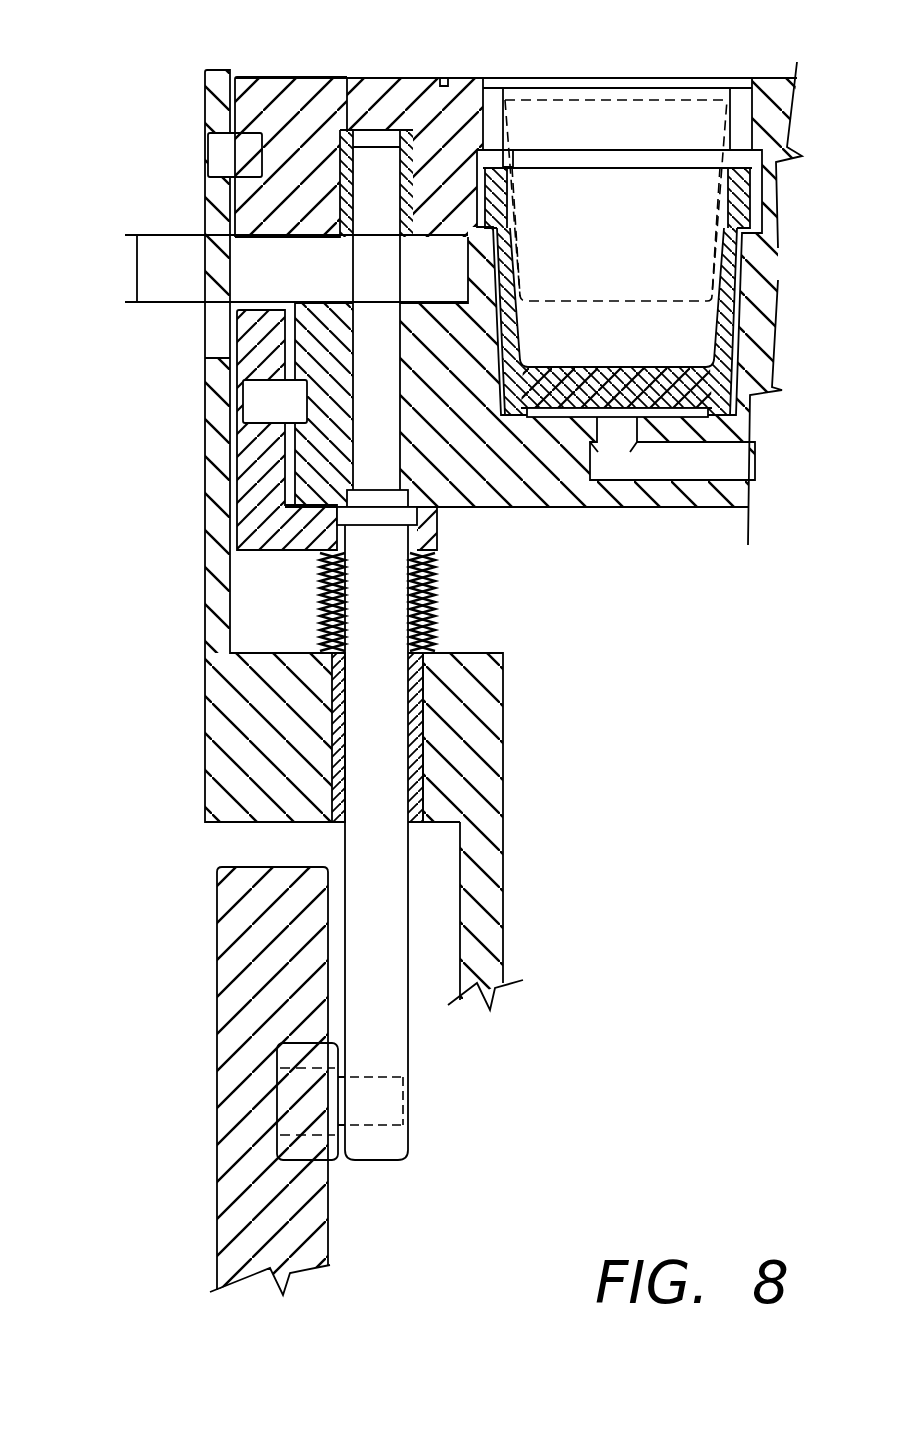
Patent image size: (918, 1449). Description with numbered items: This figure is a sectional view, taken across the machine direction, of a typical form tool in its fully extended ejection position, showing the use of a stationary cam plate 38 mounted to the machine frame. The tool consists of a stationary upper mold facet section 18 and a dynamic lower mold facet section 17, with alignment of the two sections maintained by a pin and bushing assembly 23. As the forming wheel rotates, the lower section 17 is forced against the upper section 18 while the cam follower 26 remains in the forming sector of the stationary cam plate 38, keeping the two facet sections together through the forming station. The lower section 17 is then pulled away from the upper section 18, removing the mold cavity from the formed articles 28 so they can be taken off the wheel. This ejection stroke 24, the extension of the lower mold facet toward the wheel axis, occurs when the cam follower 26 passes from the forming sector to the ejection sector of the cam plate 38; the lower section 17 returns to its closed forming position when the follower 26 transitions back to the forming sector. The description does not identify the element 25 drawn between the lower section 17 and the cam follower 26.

The dynamic lower mold facet section 17 is at (570, 508).
The stationary upper mold facet section 18 is at (245, 77).
The pin and bushing assembly 23 is at (378, 147).
The ejection stroke 24 is at (137, 262).
The lower rod 25 is at (410, 1057).
The cam follower 26 is at (335, 1160).
The formed articles 28 is at (598, 98).
The stationary cam plate 38 is at (217, 990).